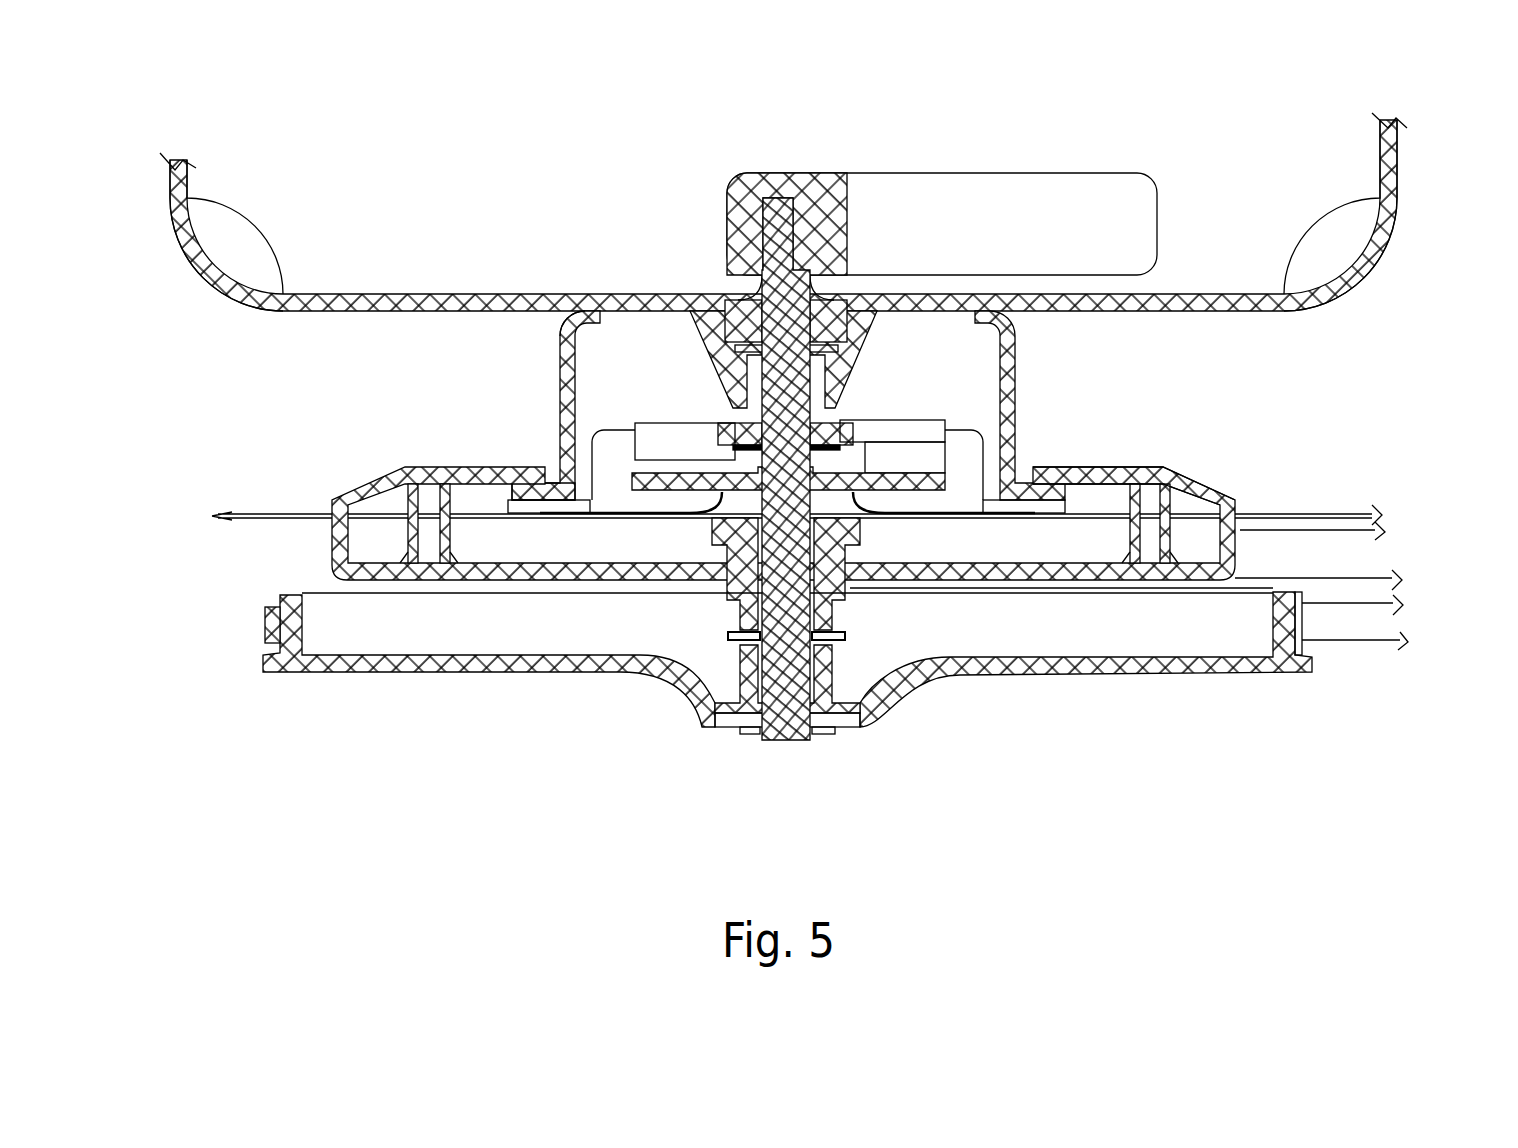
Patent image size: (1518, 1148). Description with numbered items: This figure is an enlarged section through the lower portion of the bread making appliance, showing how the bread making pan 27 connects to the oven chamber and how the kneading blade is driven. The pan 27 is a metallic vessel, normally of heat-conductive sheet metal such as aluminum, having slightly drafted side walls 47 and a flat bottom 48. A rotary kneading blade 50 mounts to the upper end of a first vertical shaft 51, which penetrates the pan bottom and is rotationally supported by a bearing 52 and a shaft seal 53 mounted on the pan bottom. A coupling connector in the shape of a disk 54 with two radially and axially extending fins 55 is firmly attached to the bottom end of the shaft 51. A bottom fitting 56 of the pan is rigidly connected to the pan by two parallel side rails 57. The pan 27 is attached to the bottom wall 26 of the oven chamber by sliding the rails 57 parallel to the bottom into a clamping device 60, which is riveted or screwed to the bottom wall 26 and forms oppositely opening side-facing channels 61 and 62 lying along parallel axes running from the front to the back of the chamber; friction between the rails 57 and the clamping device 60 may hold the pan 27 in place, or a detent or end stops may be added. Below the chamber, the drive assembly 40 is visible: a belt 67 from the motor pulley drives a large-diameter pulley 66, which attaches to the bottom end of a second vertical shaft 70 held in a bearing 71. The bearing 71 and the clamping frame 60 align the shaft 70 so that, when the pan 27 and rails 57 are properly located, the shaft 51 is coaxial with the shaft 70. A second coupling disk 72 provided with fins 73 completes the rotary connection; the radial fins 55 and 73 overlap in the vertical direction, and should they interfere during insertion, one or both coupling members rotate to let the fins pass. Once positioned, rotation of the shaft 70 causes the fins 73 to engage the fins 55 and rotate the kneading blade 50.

The bottom wall of the oven chamber 26 is at (258, 521).
The bread making pan 27 is at (1397, 135).
The drive assembly 40 is at (428, 572).
The side walls 47 is at (186, 187).
The flat bottom 48 is at (352, 298).
The rotary kneading blade 50 is at (1128, 192).
The first vertical shaft 51 is at (779, 207).
The bearing 52 is at (740, 318).
The shaft seal 53 is at (750, 291).
The coupling connector disk 54 is at (582, 330).
The fins 55 is at (657, 435).
The bottom fitting 56 is at (1013, 404).
The side rails 57 is at (535, 491).
The clamping device 60 is at (1152, 470).
The side-facing channel 61 is at (540, 508).
The side-facing channel 62 is at (1037, 506).
The large-diameter pulley 66 is at (1196, 666).
The belt 67 is at (1372, 628).
The second vertical shaft 70 is at (801, 711).
The bearing 71 is at (742, 599).
The second coupling disk 72 is at (653, 488).
The fins 73 is at (928, 462).